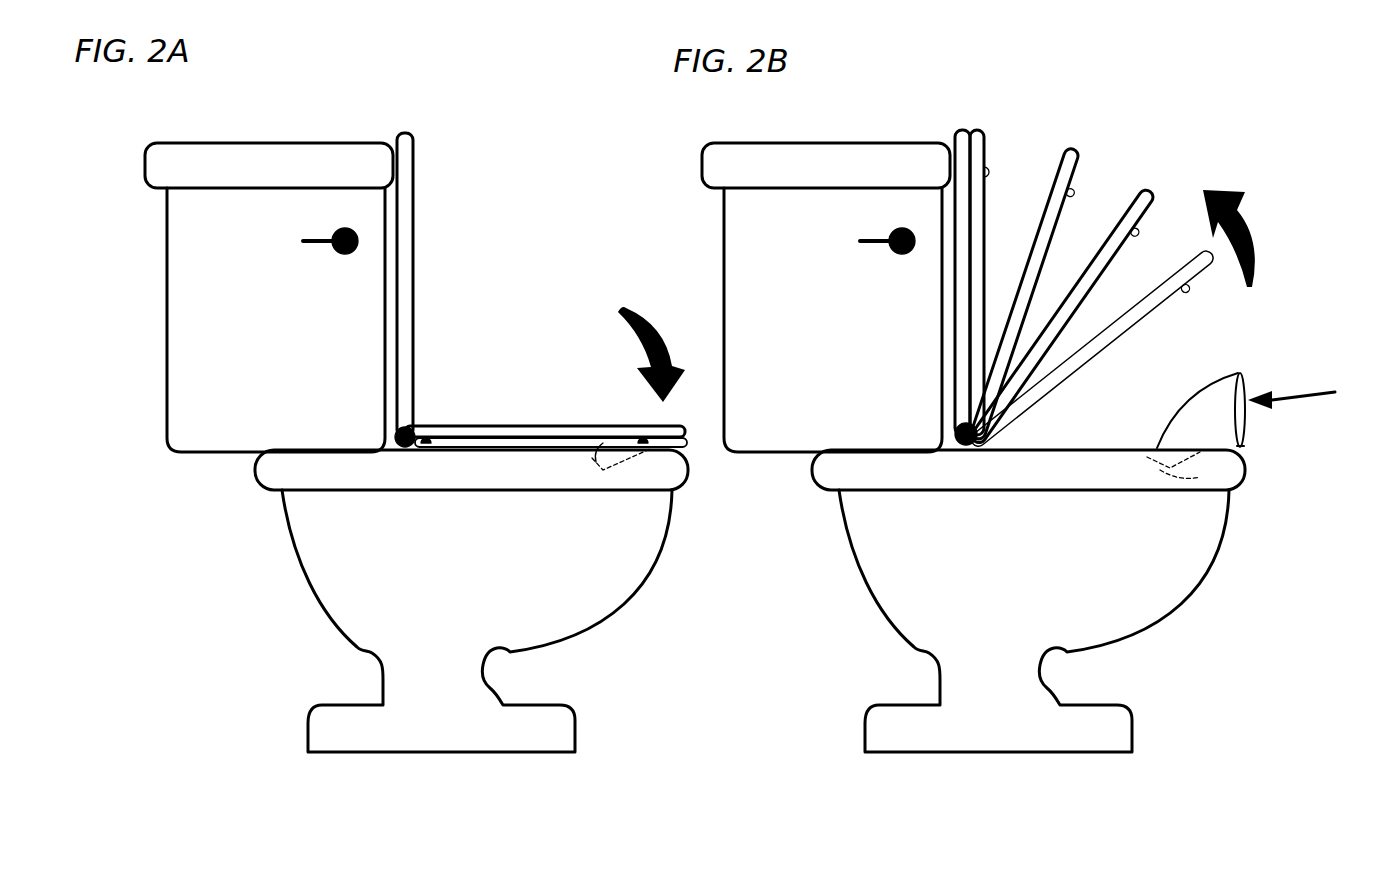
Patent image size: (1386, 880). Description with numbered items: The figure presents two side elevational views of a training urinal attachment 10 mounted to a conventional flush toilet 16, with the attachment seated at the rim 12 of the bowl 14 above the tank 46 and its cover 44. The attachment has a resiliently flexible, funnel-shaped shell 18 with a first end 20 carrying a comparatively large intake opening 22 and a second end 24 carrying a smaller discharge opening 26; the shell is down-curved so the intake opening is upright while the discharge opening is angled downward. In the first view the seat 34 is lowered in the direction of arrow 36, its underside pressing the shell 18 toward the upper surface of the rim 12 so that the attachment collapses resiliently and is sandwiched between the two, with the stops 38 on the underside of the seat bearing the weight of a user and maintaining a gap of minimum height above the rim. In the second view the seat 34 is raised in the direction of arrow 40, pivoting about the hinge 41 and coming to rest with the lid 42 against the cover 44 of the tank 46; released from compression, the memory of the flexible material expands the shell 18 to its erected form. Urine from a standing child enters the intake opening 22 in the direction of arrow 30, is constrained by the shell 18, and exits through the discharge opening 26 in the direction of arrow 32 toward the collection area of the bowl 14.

In FIG. 2A, the training urinal attachment 10 is at (582, 465).
In FIG. 2B, the training urinal attachment 10 is at (1190, 446).
In FIG. 2A, the rim 12 is at (690, 480).
In FIG. 2B, the rim 12 is at (1248, 480).
In FIG. 2A, the bowl 14 is at (613, 627).
In FIG. 2B, the bowl 14 is at (1215, 587).
In FIG. 2A, the flush toilet 16 is at (400, 447).
In FIG. 2B, the flush toilet 16 is at (945, 434).
In FIG. 2A, the shell 18 is at (690, 435).
In FIG. 2B, the shell 18 is at (1180, 420).
In FIG. 2B, the first end 20 is at (1248, 388).
In FIG. 2B, the intake opening 22 is at (1252, 427).
In FIG. 2A, the second end 24 is at (595, 462).
In FIG. 2B, the second end 24 is at (1187, 470).
In FIG. 2B, the discharge opening 26 is at (1135, 468).
In FIG. 2B, the arrow 30 is at (1316, 392).
In FIG. 2B, the arrow 32 is at (1142, 482).
In FIG. 2A, the seat 34 is at (530, 427).
In FIG. 2B, the seat 34 is at (978, 132).
In FIG. 2A, the arrow 36 is at (662, 338).
In FIG. 2A, the stops 38 is at (652, 452).
In FIG. 2B, the stops 38 is at (992, 176).
In FIG. 2B, the arrow 40 is at (1250, 222).
In FIG. 2A, the hinge 41 is at (393, 447).
In FIG. 2B, the hinge 41 is at (980, 453).
In FIG. 2A, the lid 42 is at (417, 160).
In FIG. 2B, the lid 42 is at (955, 135).
In FIG. 2A, the cover 44 is at (145, 175).
In FIG. 2B, the cover 44 is at (712, 147).
In FIG. 2A, the tank 46 is at (165, 265).
In FIG. 2B, the tank 46 is at (722, 235).